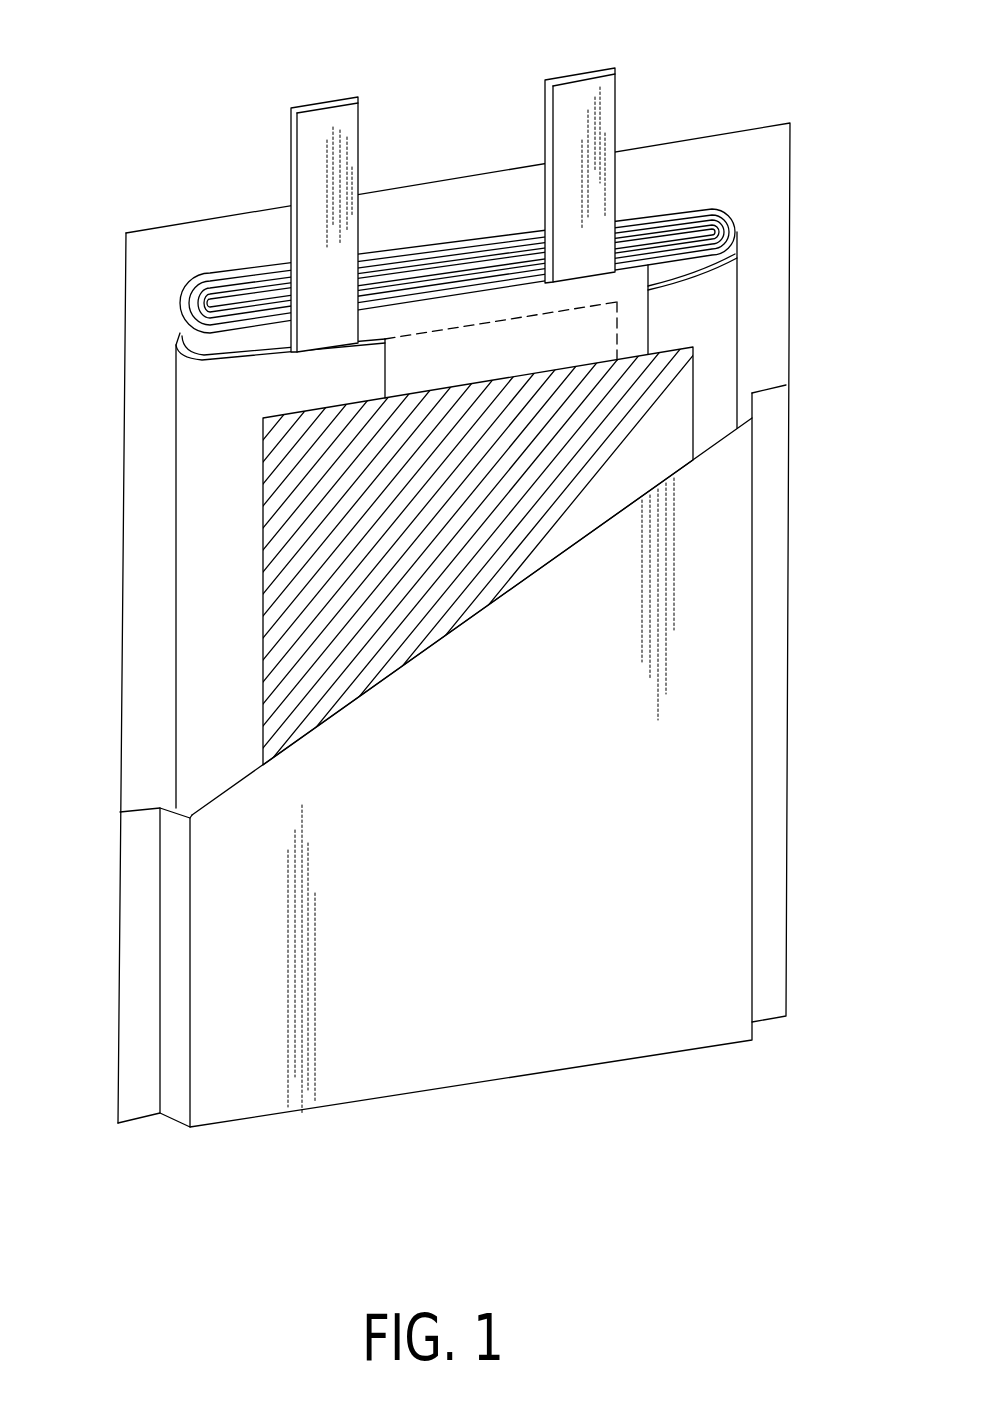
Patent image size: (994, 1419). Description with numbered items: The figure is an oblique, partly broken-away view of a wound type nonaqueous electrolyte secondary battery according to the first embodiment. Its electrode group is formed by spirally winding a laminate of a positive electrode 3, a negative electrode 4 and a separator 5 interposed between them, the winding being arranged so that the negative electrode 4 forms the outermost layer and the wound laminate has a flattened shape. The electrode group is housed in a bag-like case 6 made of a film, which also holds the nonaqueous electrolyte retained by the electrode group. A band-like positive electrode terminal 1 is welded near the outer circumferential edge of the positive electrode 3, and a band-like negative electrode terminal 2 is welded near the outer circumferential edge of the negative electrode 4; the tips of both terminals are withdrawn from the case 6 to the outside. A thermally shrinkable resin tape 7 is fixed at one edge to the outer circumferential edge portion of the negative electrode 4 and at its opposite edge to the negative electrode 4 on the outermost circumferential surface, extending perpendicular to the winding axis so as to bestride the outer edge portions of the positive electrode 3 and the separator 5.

The positive electrode terminal 1 is at (575, 90).
The negative electrode terminal 2 is at (318, 127).
The positive electrode 3 is at (603, 338).
The negative electrode 4 is at (192, 401).
The separator 5 is at (640, 303).
The case 6 is at (160, 870).
The thermally shrinkable resin tape 7 is at (676, 377).